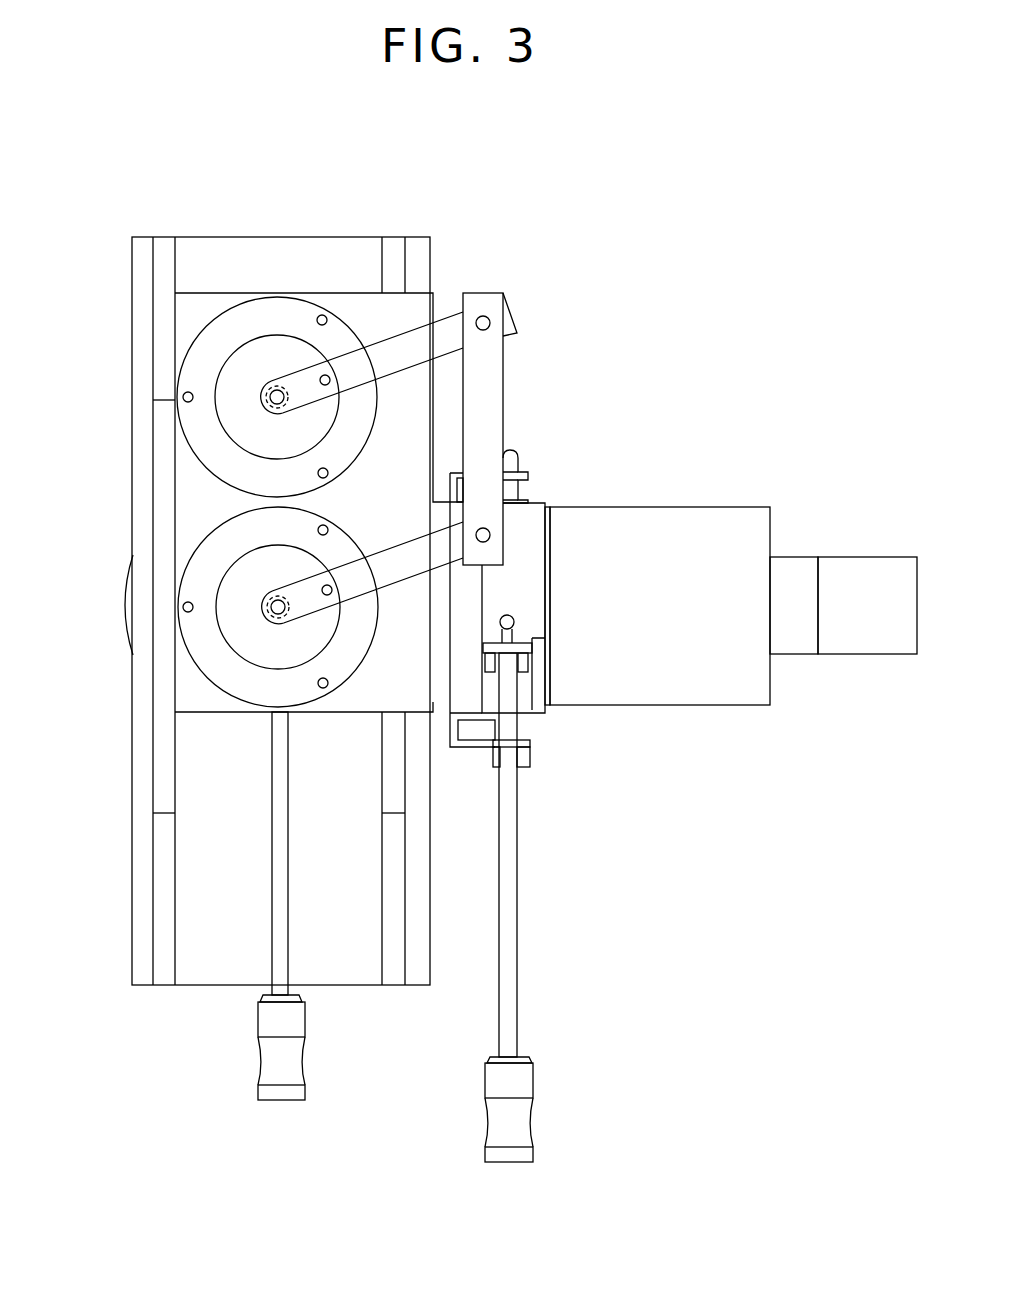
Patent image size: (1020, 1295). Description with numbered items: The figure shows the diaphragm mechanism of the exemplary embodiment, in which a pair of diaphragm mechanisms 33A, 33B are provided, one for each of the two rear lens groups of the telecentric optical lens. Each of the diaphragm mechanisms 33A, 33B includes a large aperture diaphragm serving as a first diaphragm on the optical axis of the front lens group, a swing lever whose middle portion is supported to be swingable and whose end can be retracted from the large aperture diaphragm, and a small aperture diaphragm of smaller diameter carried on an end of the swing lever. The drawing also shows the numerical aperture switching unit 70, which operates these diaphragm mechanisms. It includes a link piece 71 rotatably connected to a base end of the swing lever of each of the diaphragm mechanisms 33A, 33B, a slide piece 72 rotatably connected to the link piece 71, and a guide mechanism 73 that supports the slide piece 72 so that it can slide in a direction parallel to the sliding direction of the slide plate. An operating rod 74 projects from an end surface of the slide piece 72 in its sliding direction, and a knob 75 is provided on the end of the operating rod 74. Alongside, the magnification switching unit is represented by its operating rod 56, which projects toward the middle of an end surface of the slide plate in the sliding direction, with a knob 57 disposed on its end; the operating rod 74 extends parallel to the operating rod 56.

The diaphragm mechanism 33A is at (239, 631).
The diaphragm mechanism 33B is at (320, 319).
The operating rod 56 is at (290, 863).
The knob 57 is at (305, 1017).
The numerical aperture switching unit 70 is at (549, 266).
The link piece 71 is at (492, 383).
The slide piece 72 is at (532, 578).
The guide mechanism 73 is at (522, 698).
The operating rod 74 is at (520, 905).
The knob 75 is at (533, 1078).